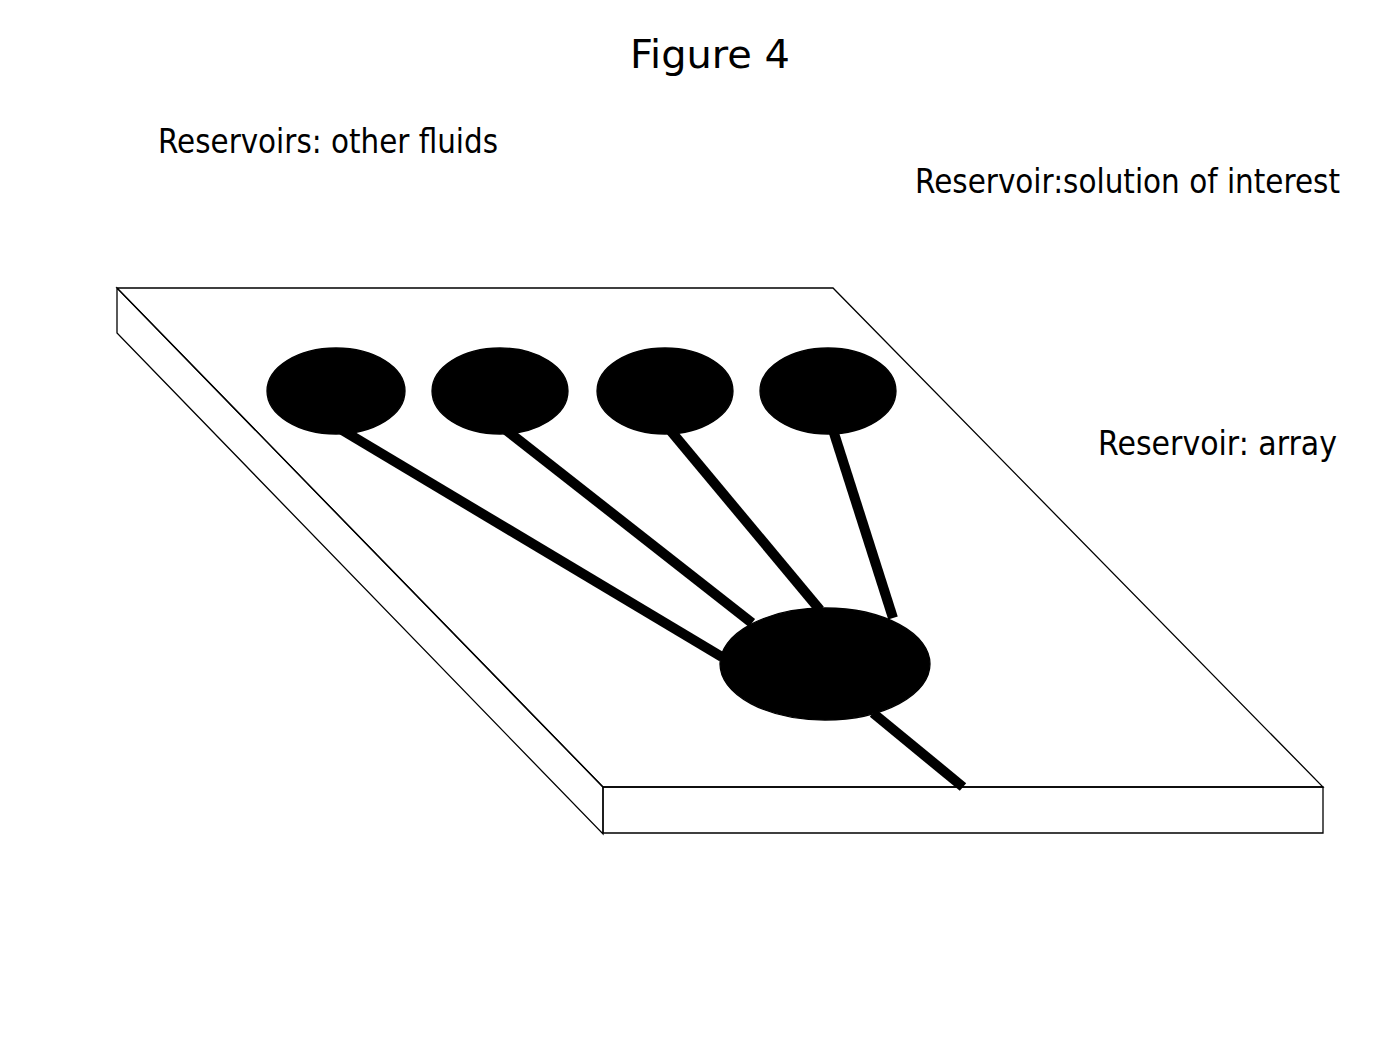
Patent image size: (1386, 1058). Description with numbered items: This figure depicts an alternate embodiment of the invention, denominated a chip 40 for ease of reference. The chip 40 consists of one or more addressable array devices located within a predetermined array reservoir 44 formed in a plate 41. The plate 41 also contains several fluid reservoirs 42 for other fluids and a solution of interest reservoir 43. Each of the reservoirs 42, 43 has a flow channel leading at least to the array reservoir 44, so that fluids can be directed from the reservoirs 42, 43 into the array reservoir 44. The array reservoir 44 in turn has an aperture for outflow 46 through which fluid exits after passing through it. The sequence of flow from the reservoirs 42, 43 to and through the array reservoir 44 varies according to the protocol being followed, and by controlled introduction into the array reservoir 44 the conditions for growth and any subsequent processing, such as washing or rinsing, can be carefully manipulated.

The chip 40 is at (684, 143).
The plate 41 is at (370, 592).
The fluid reservoirs 42 is at (665, 349).
The solution of interest reservoir 43 is at (833, 350).
The array reservoir 44 is at (850, 607).
The aperture for outflow 46 is at (957, 815).